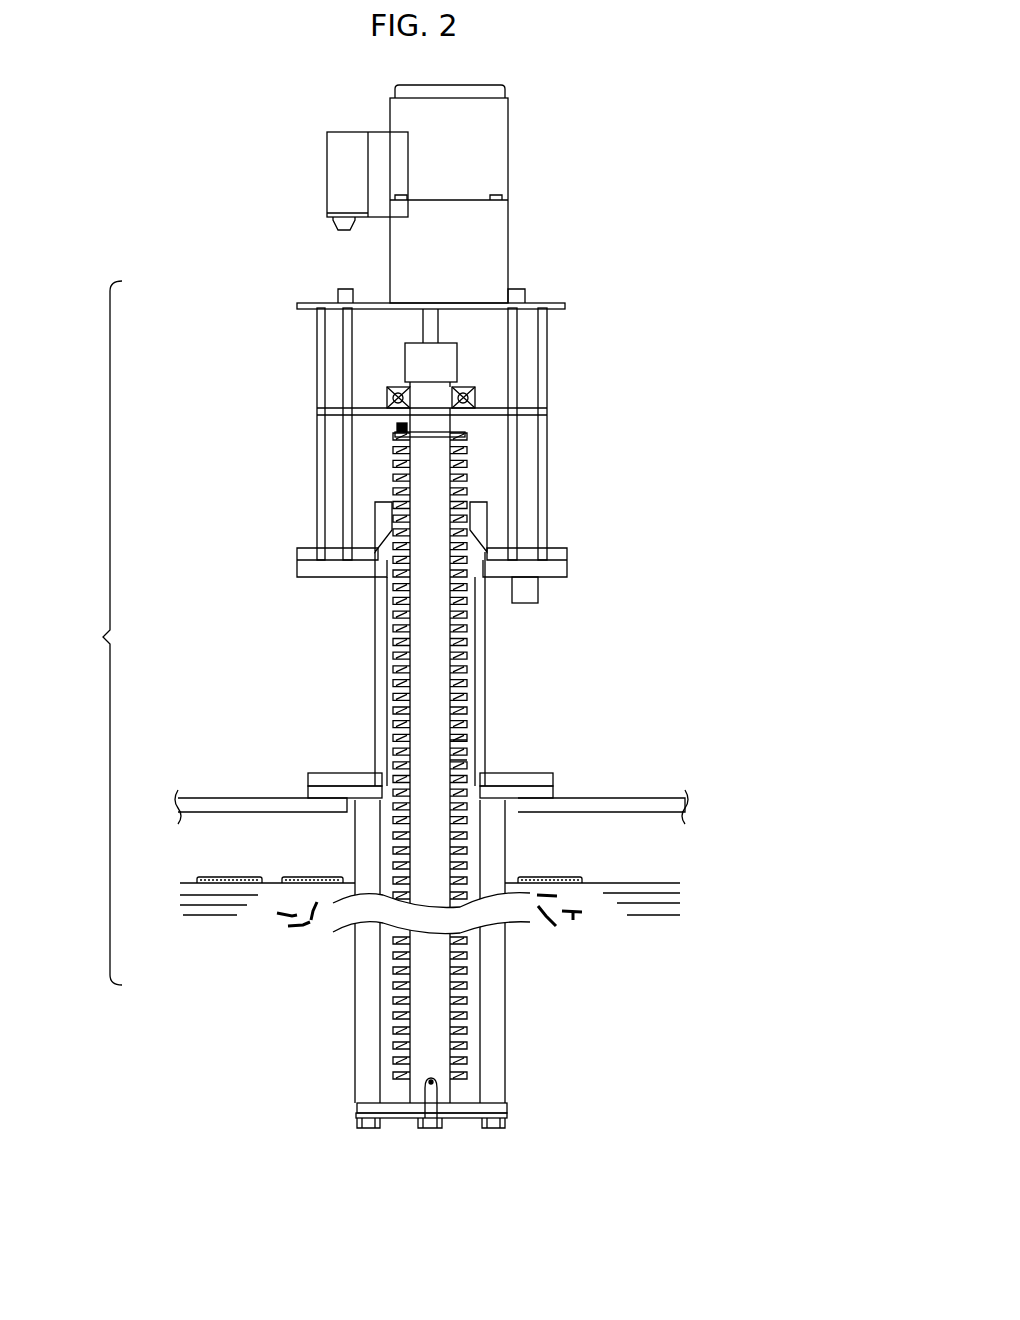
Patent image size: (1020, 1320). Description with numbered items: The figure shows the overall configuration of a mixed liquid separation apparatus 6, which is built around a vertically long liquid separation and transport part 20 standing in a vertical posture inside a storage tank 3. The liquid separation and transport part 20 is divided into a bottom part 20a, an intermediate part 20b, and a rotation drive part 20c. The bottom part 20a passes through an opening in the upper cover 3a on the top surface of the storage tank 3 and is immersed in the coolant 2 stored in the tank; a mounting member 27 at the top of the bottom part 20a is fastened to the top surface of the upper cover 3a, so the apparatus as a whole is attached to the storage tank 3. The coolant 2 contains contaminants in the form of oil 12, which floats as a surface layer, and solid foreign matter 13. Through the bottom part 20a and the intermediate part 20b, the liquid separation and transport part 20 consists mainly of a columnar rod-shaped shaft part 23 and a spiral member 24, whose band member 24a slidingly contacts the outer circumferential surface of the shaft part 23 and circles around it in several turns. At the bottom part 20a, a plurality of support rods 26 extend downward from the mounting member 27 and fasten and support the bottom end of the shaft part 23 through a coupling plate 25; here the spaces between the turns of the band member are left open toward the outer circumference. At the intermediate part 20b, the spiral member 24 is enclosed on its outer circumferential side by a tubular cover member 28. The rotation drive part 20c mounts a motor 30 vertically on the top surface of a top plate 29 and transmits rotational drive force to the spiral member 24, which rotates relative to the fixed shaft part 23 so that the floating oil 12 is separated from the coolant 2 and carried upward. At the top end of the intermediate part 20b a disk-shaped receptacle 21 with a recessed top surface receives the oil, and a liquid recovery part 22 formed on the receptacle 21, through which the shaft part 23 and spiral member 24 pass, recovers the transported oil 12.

The mixed liquid separation apparatus 6 is at (458, 71).
The motor 30 is at (483, 236).
The top plate 29 is at (567, 305).
The rotation drive part 20c is at (286, 305).
The liquid separation and transport part 20 is at (92, 633).
The receptacle 21 is at (307, 565).
The liquid recovery part 22 is at (497, 518).
The intermediate part 20b is at (367, 657).
The tubular cover member 28 is at (481, 662).
The spiral member 24 is at (485, 706).
The band member 24a is at (463, 773).
The shaft part 23 is at (423, 747).
The mounting member 27 is at (553, 785).
The storage tank 3 is at (695, 766).
The upper cover 3a is at (655, 802).
The oil 12 is at (297, 877).
The coolant 2 is at (668, 888).
The solid foreign matter 13 is at (290, 923).
The bottom part 20a is at (345, 1006).
The support rods 26 is at (368, 1048).
The coupling plate 25 is at (455, 1108).